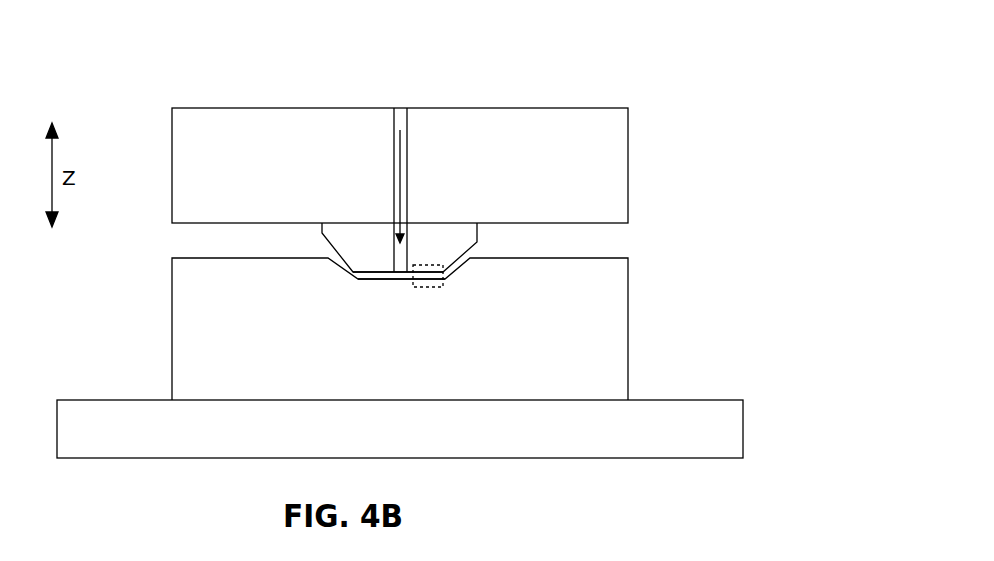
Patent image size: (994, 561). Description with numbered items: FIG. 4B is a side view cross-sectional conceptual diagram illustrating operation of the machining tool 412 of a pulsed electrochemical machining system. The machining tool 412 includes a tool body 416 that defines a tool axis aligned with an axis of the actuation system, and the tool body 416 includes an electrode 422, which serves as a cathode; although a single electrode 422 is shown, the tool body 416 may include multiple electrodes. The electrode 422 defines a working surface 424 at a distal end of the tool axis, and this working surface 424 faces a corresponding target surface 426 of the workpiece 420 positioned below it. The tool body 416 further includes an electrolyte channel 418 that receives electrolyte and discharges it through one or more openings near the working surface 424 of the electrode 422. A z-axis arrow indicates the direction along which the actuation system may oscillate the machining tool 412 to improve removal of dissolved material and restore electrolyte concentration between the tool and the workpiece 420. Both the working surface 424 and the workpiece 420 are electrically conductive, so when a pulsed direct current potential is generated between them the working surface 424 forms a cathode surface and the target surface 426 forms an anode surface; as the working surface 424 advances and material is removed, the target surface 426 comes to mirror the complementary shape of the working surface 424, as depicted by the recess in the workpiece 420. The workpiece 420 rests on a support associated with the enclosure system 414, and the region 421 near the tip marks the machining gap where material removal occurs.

The machining tool 412 is at (660, 81).
The enclosure system 414 is at (685, 400).
The tool body 416 is at (457, 117).
The electrolyte channel 418 is at (398, 108).
The workpiece 420 is at (630, 342).
The deposition region 421 is at (443, 268).
The electrode 422 is at (443, 245).
The working surface 424 is at (353, 276).
The target surface 426 is at (390, 280).